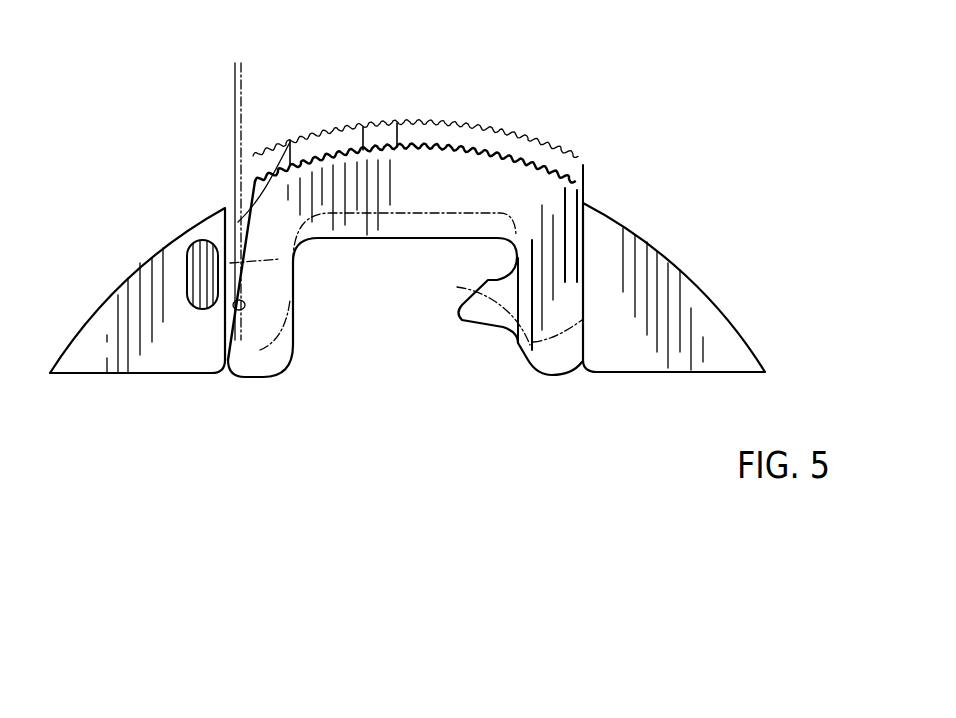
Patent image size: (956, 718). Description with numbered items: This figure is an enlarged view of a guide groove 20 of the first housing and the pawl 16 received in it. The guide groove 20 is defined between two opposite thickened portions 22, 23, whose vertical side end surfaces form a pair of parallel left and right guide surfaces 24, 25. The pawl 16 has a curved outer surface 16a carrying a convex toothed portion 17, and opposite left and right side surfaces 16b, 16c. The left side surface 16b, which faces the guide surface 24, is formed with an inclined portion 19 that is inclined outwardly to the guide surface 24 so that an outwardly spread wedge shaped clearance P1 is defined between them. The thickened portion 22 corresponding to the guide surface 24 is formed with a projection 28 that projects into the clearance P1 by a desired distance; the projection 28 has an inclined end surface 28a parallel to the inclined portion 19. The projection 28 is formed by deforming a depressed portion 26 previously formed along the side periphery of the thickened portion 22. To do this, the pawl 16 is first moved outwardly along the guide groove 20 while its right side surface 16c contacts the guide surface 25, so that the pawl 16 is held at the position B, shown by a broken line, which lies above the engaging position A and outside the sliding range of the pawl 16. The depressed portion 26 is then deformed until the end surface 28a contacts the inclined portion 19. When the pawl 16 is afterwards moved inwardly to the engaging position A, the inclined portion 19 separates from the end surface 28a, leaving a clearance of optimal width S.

The pawl 16 is at (407, 185).
The curved outer surface 16a is at (398, 123).
The left side surface 16b is at (291, 140).
The right side surface 16c is at (584, 219).
The convex toothed portion 17 is at (363, 127).
The inclined portion 19 is at (243, 282).
The guide groove 20 is at (312, 357).
The thickened portion 22 is at (109, 342).
The thickened portion 23 is at (692, 297).
The guide surface 24 is at (244, 345).
The guide surface 25 is at (582, 290).
The depressed portion 26 is at (191, 266).
The projection 28 is at (245, 272).
The inclined end surface 28a is at (228, 313).
The wedge shaped clearance P1 is at (233, 222).
The clearance width S is at (270, 75).
The engaging position A is at (440, 147).
The projected position B is at (440, 122).